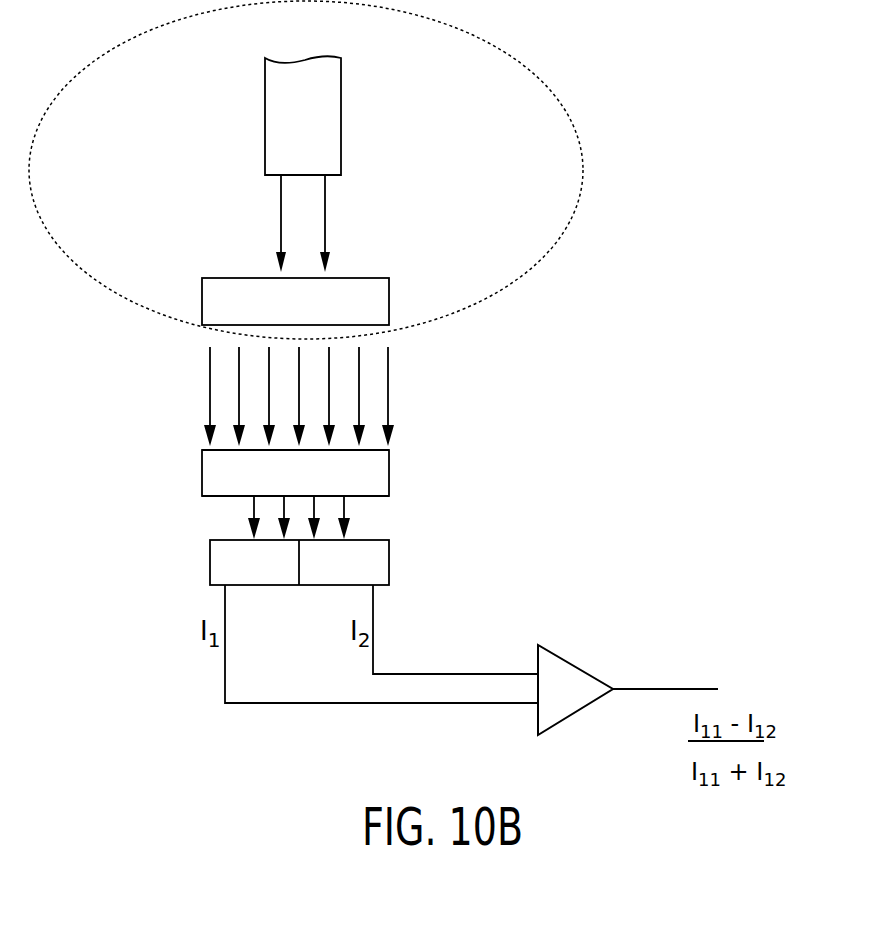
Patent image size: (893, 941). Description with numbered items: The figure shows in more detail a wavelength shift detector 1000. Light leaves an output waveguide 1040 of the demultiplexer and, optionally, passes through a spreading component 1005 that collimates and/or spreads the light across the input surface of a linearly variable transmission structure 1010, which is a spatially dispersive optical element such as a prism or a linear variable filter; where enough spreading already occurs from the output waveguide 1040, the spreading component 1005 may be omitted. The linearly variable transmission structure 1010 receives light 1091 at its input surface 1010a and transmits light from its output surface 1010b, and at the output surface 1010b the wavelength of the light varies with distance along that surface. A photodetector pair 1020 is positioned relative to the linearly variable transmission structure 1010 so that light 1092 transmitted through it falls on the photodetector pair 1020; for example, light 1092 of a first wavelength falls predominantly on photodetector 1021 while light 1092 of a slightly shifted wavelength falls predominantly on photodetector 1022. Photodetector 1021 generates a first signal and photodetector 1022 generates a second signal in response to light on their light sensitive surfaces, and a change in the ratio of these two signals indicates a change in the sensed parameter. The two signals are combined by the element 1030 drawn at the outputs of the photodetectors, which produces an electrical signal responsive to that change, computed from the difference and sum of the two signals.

The wavelength shift detector 1000 is at (218, 258).
The output waveguide 1040 is at (342, 126).
The spreading component 1005 is at (390, 296).
The light 1091 is at (413, 381).
The linearly variable transmission structure 1010 is at (390, 490).
The input surface 1010a is at (390, 450).
The output surface 1010b is at (210, 497).
The light 1092 is at (370, 517).
The photodetector pair 1020 is at (339, 591).
The photodetector 1021 is at (268, 572).
The photodetector 1022 is at (332, 572).
The differential amplifier 1030 is at (566, 678).